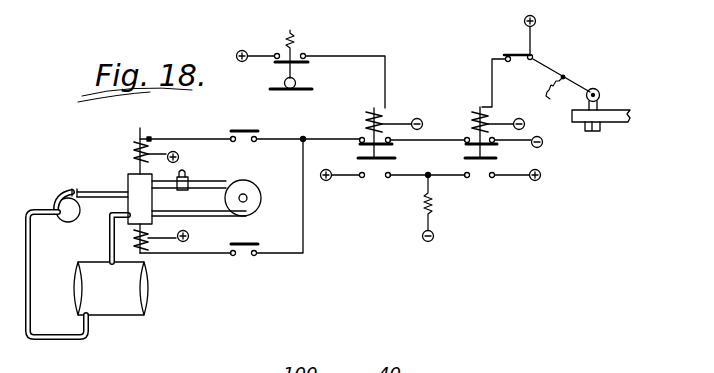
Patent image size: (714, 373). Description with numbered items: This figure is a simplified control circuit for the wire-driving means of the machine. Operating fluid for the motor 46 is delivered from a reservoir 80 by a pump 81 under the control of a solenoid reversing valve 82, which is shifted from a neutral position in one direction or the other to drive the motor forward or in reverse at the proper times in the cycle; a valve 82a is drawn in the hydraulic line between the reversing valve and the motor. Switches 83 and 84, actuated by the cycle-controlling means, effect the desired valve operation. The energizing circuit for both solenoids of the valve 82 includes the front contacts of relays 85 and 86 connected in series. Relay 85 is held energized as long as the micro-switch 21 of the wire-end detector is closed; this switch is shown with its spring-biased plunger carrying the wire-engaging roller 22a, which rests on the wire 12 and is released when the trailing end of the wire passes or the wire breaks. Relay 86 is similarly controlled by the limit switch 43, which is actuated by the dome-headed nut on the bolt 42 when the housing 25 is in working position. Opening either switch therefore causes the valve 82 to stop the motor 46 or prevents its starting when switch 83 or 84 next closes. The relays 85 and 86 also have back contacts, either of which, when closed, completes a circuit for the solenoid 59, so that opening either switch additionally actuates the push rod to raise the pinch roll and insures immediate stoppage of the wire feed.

The reservoir 80 is at (111, 288).
The pump 81 is at (56, 195).
The solenoid reversing valve 82 is at (128, 184).
The relief valve 82a is at (186, 172).
The switch 83 is at (238, 131).
The switch 84 is at (250, 243).
The relay 85 is at (366, 116).
The relay 86 is at (472, 116).
The motor 46 is at (261, 198).
The micro-switch 21 is at (276, 64).
The wire-engaging roller 22a is at (296, 82).
The wire 12 is at (288, 90).
The limit switch 43 is at (518, 55).
The bolt 42 is at (599, 99).
The housing 25 is at (610, 122).
The solenoid 59 is at (431, 210).